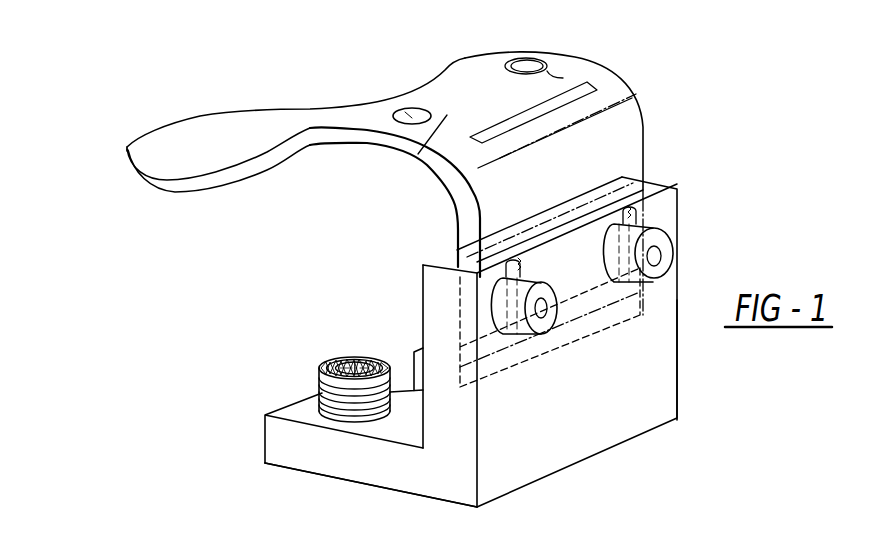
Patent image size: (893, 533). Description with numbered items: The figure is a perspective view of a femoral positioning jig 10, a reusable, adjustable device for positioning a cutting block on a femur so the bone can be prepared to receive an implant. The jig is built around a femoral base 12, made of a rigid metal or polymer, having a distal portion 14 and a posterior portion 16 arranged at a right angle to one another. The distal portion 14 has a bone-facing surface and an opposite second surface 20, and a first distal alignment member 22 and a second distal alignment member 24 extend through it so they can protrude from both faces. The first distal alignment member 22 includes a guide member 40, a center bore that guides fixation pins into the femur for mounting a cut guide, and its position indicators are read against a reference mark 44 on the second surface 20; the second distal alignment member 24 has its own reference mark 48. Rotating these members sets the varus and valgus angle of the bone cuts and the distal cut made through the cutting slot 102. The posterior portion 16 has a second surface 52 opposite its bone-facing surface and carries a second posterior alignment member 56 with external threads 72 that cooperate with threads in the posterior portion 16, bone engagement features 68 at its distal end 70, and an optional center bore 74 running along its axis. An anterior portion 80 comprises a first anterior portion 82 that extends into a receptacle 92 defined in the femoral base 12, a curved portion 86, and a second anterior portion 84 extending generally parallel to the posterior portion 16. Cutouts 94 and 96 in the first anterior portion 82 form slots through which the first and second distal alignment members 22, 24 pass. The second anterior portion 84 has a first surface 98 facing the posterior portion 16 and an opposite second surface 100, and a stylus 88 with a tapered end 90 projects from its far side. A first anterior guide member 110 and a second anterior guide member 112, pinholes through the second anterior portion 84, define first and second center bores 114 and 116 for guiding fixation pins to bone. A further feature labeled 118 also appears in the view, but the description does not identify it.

The femoral positioning jig 10 is at (132, 98).
The femoral base 12 is at (580, 428).
The distal portion 14 is at (668, 298).
The posterior portion 16 is at (285, 440).
The second surface 20 is at (510, 465).
The first distal alignment member 22 is at (670, 239).
The second distal alignment member 24 is at (528, 319).
The guide member 40 is at (536, 309).
The reference mark 44 is at (635, 214).
The reference mark 48 is at (519, 264).
The second surface 52 is at (358, 480).
The second posterior alignment member 56 is at (320, 393).
The bone engagement features 68 is at (320, 364).
The distal end 70 is at (338, 358).
The external threads 72 is at (340, 403).
The center bore 74 is at (352, 364).
The anterior portion 80 is at (474, 84).
The first anterior portion 82 is at (630, 137).
The second anterior portion 84 is at (563, 78).
The curved portion 86 is at (443, 167).
The stylus 88 is at (220, 138).
The tapered end 90 is at (125, 147).
The receptacle 92 is at (592, 340).
The first cutout 94 is at (626, 207).
The second cutout 96 is at (520, 268).
The first surface 98 is at (360, 144).
The second surface 100 is at (418, 154).
The cutting slot 102 is at (605, 88).
The first anterior guide member 110 is at (528, 66).
The second anterior guide member 112 is at (400, 110).
The first center bore 114 is at (550, 70).
The second center bore 116 is at (412, 117).
The bottom edge 118 is at (527, 529).